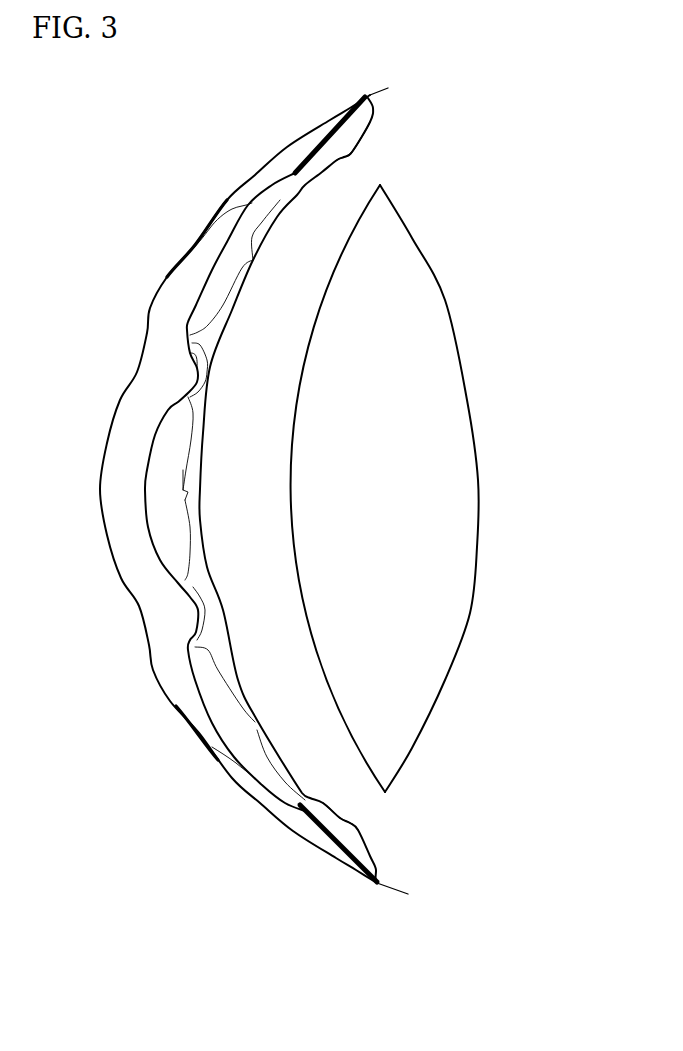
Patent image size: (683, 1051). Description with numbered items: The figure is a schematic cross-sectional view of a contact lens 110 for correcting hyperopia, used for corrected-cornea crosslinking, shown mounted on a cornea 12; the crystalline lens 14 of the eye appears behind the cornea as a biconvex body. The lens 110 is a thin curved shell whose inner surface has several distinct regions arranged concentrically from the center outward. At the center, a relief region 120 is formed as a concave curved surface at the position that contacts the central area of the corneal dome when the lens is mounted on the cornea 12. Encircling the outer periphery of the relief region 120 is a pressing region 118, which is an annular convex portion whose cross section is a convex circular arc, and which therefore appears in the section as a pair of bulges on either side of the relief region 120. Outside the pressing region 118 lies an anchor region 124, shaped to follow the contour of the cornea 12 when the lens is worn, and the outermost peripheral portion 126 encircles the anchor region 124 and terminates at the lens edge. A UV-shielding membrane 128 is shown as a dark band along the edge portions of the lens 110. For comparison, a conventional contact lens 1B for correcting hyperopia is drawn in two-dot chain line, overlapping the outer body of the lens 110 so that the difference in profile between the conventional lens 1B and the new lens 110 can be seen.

The contact lens for correcting hyperopia 110 is at (165, 283).
The cornea 12 is at (220, 652).
The crystalline lens 14 is at (422, 322).
The pressing region 118 is at (207, 372).
The relief region 120 is at (188, 492).
The anchor region 124 is at (252, 258).
The peripheral portion 126 is at (344, 157).
The UV-shielding membrane 128 is at (308, 160).
The conventional contact lens for correcting hyperopia 1B is at (237, 773).